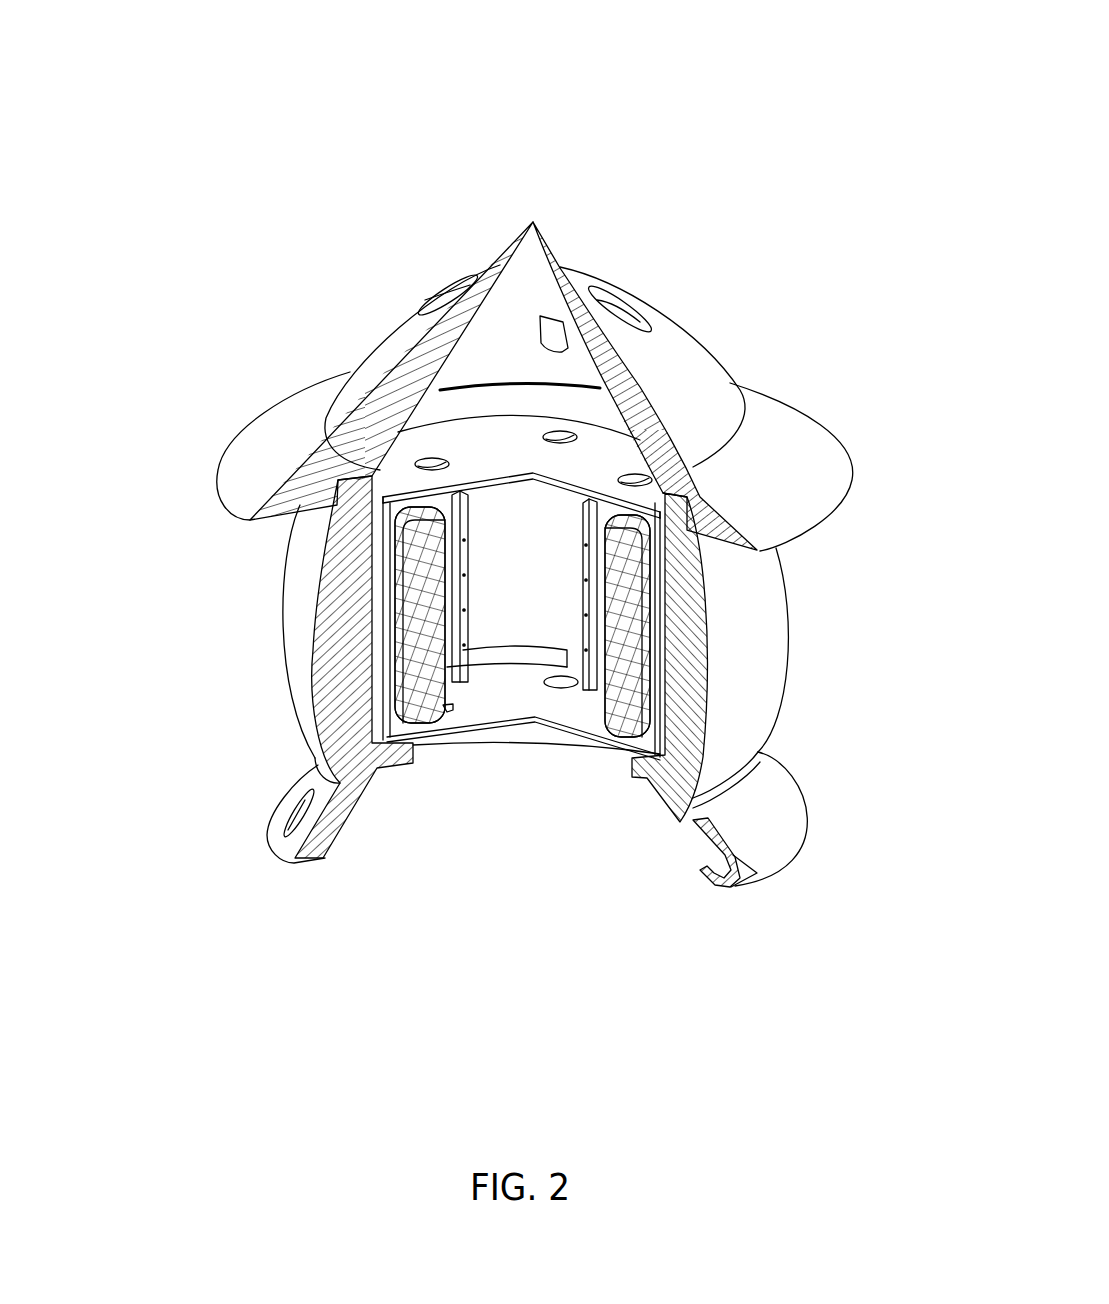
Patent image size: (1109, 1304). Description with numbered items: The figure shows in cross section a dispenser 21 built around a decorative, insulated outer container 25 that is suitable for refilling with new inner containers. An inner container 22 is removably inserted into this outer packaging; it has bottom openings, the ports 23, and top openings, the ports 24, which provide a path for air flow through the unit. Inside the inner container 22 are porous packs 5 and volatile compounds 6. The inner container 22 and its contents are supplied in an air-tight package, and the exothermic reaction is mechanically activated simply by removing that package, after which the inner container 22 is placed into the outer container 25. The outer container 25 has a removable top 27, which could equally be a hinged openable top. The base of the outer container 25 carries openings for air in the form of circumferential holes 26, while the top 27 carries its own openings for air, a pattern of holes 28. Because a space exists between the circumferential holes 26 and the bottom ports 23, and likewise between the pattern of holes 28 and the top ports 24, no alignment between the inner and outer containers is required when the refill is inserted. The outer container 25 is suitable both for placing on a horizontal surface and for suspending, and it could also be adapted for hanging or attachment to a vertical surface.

The dispenser 21 is at (724, 132).
The inner container 22 is at (592, 467).
The ports 23 is at (450, 712).
The ports 24 is at (428, 462).
The insulated outer container 25 is at (690, 660).
The circumferential holes 26 is at (287, 819).
The removable top 27 is at (403, 382).
The pattern of holes 28 is at (447, 290).
The porous packs 5 is at (403, 655).
The volatile compounds 6 is at (463, 608).